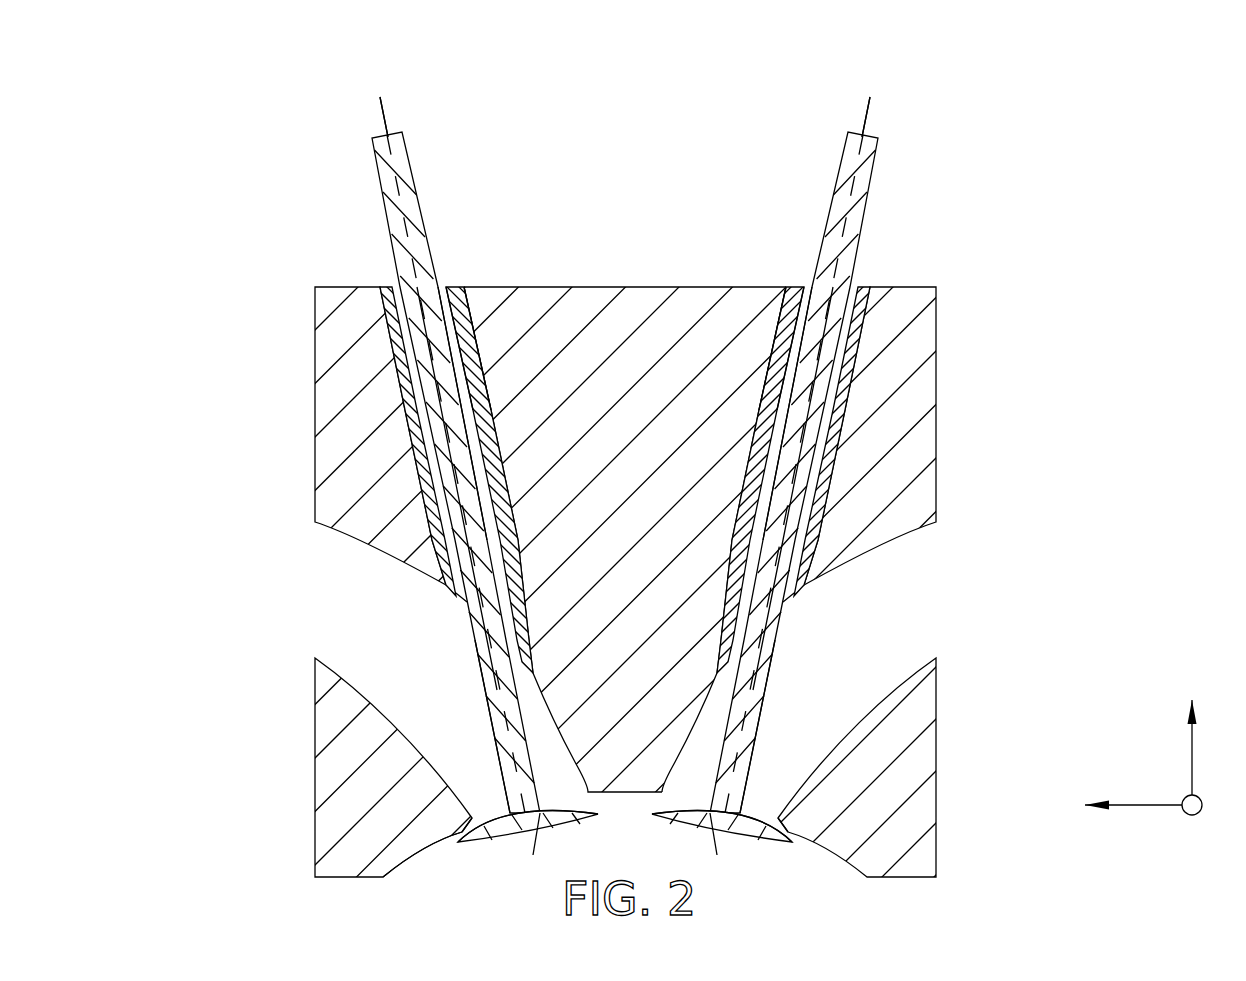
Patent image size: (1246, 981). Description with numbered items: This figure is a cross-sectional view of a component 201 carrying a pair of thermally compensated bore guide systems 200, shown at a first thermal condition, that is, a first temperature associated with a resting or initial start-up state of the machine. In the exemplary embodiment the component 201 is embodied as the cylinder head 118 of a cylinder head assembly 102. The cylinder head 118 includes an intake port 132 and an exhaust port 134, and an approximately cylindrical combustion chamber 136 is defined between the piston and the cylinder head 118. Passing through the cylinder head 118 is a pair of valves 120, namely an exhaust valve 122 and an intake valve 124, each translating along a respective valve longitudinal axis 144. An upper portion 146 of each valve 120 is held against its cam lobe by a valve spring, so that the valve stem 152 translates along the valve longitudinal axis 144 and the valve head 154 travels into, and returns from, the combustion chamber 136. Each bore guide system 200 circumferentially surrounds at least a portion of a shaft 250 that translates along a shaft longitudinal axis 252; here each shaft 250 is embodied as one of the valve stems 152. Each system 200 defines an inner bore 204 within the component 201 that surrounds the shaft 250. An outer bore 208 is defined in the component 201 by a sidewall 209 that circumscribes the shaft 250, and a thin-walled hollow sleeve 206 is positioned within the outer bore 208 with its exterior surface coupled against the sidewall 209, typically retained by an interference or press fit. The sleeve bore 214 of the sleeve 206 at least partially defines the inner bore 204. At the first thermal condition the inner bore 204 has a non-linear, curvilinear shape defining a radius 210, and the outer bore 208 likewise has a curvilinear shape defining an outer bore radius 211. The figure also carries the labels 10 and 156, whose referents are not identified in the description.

The coordinate system 10 is at (1152, 775).
The cylinder head assembly 102 is at (605, 498).
The cylinder head 118 is at (599, 575).
The component 201 is at (599, 575).
The valves 120 is at (734, 678).
The exhaust valve 122 is at (481, 672).
The intake valve 124 is at (780, 615).
The intake port 132 is at (870, 645).
The exhaust port 134 is at (321, 740).
The combustion chamber 136 is at (482, 855).
The valve longitudinal axis 144 is at (624, 104).
The shaft longitudinal axis 252 is at (378, 102).
The upper portion 146 is at (606, 471).
The valve stem 152 is at (606, 726).
The shaft 250 is at (497, 733).
The valve head 154 is at (465, 830).
The opening 156 is at (478, 818).
The thermally compensated bore guide system 200 is at (605, 474).
The inner bore 204 is at (473, 217).
The sleeve 206 is at (625, 454).
The outer bore 208 is at (497, 217).
The sidewall 209 is at (378, 288).
The radius 210 is at (606, 471).
The outer bore radius 211 is at (606, 471).
The sleeve bore 214 is at (442, 217).